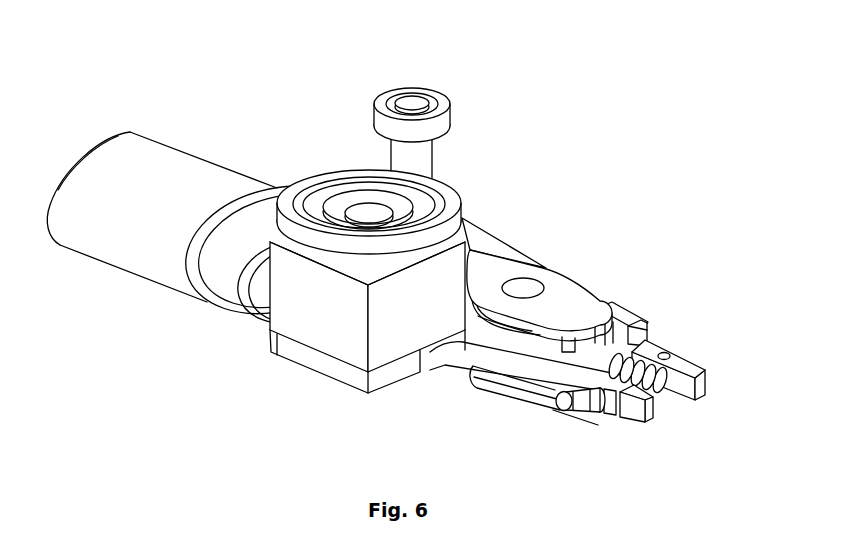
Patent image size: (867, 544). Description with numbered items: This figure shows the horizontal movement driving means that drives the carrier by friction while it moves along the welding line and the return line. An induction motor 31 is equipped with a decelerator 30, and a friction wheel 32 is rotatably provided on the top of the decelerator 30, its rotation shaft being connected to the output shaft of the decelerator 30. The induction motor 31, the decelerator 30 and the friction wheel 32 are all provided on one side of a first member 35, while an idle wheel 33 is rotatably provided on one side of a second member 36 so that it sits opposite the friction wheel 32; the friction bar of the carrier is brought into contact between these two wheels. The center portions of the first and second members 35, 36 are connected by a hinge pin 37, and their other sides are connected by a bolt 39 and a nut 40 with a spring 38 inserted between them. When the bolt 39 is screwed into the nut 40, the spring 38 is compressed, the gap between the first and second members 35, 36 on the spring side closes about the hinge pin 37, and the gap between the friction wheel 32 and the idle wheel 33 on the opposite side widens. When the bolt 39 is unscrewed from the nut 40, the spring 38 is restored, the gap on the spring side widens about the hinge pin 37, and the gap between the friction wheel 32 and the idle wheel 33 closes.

The decelerator 30 is at (313, 323).
The induction motor 31 is at (172, 157).
The friction wheel 32 is at (357, 172).
The idle wheel 33 is at (423, 88).
The first member 35 is at (447, 362).
The second member 36 is at (480, 222).
The hinge pin 37 is at (524, 290).
The spring 38 is at (646, 341).
The bolt 39 is at (680, 347).
The nut 40 is at (612, 414).